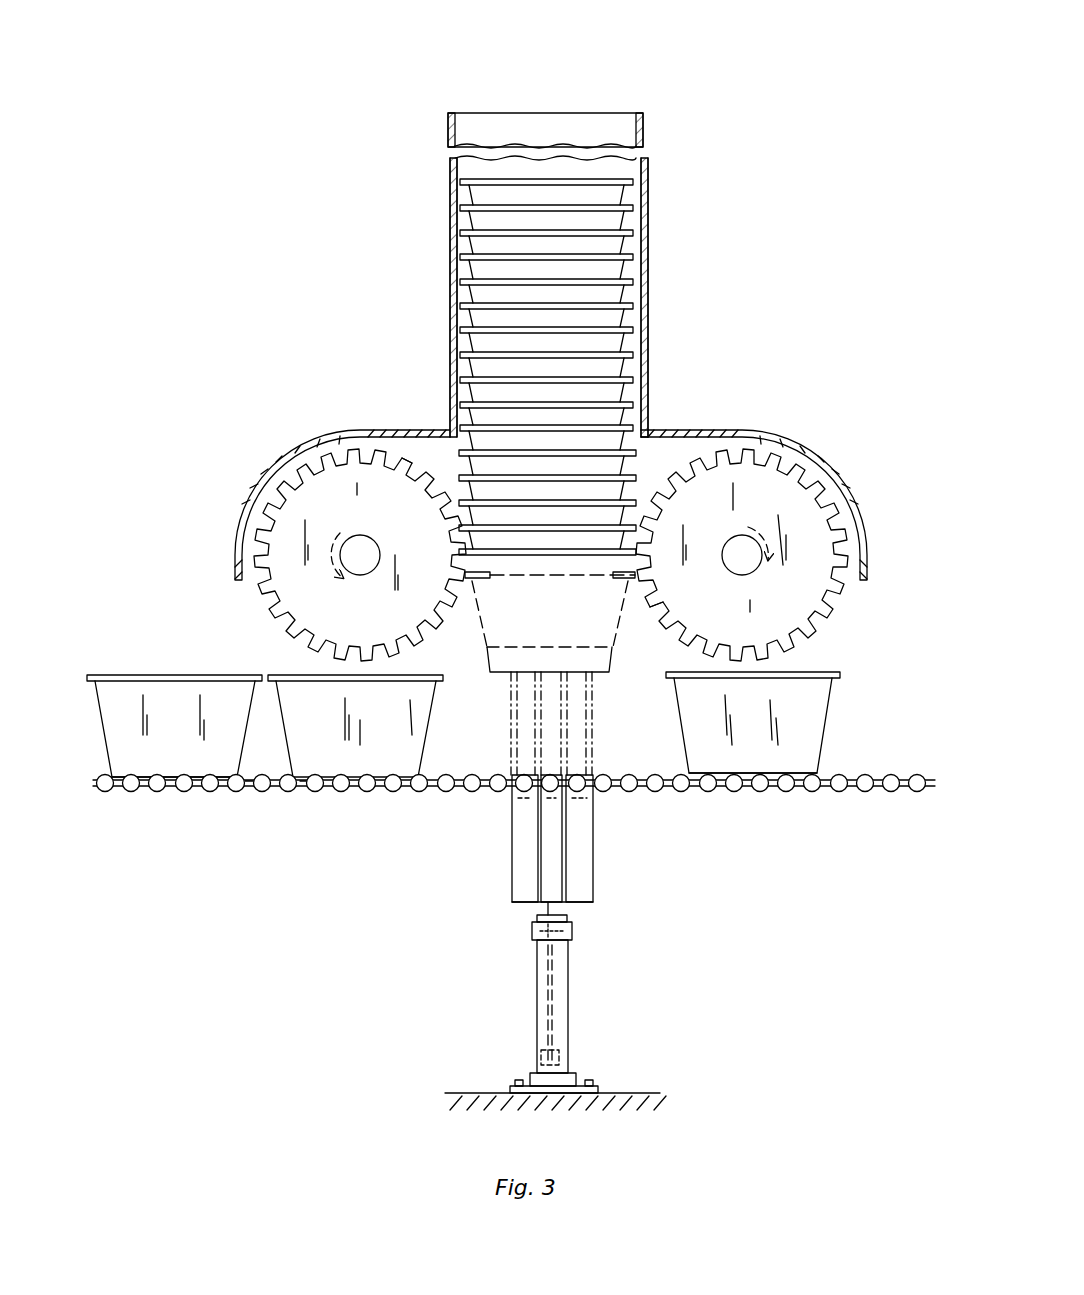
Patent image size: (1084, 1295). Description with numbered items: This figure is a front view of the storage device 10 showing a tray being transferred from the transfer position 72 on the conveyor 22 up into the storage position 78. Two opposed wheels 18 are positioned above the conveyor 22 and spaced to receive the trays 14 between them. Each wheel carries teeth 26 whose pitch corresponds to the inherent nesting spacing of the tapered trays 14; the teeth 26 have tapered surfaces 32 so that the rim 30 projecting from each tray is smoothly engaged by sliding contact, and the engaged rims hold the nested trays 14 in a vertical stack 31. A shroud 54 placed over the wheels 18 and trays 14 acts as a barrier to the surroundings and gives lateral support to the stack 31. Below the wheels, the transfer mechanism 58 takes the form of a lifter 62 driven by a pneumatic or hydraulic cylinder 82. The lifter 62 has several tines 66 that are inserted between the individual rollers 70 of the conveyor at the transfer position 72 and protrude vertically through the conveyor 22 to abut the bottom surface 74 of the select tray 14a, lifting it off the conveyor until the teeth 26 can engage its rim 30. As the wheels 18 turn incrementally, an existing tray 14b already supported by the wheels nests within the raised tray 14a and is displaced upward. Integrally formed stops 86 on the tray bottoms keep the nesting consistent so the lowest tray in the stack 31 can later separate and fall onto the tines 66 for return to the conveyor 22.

The storage device 10 is at (312, 220).
The stack 31 is at (570, 86).
The shroud 54 is at (649, 234).
The trays 14 is at (652, 455).
The teeth 26 is at (320, 462).
The wheels 18 is at (278, 597).
The tapered surfaces 32 is at (406, 470).
The existing tray 14b is at (472, 558).
The stops 86 is at (607, 642).
The select tray 14a is at (616, 655).
The storage position 78 is at (470, 622).
The rim 30 is at (96, 690).
The bottom surface 74 is at (168, 792).
The rollers 70 is at (318, 793).
The transfer position 72 is at (500, 762).
The conveyor 22 is at (900, 806).
The tines 66 is at (595, 818).
The lifter 62 is at (514, 905).
The pneumatic or hydraulic cylinder 82 is at (570, 998).
The transfer mechanism 58 is at (672, 918).